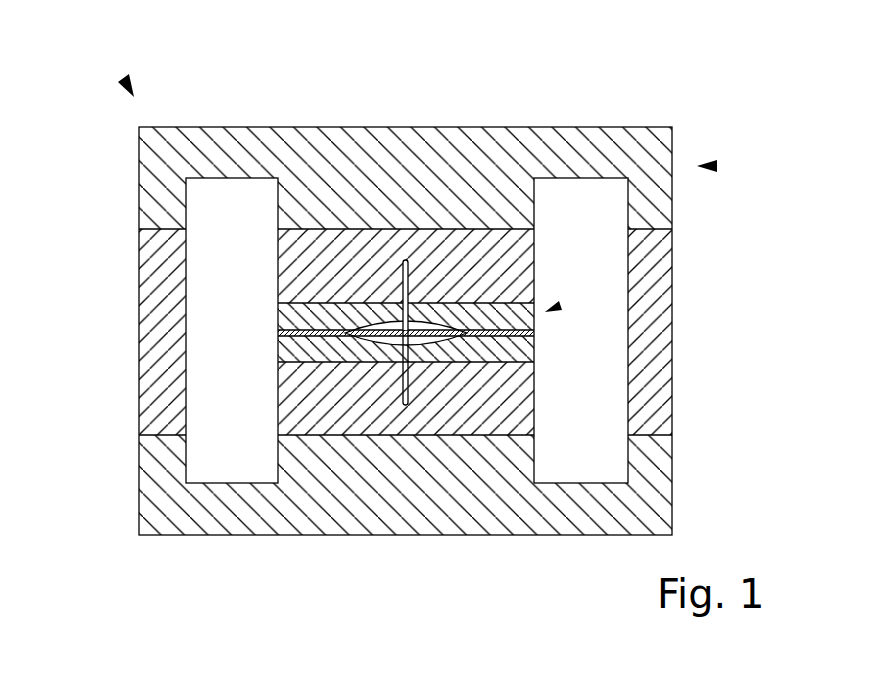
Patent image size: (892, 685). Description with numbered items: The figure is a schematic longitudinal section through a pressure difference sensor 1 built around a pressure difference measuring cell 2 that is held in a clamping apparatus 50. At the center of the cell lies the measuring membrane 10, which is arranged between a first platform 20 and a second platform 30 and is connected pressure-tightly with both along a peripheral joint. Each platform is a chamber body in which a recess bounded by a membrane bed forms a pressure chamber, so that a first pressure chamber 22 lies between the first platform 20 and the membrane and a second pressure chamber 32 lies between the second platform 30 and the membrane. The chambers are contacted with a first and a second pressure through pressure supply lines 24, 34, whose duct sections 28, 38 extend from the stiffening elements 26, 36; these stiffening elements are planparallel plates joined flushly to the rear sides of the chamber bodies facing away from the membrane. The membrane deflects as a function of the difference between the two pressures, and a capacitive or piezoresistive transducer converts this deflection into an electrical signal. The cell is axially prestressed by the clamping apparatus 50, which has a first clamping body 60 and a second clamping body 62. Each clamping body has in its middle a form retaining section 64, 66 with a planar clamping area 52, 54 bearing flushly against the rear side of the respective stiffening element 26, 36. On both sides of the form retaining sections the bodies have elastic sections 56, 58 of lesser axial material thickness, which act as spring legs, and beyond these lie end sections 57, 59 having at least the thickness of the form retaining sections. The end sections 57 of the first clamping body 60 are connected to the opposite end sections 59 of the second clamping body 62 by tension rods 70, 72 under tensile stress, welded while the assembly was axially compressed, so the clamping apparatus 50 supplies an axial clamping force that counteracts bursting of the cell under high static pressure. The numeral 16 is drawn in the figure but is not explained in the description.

The pressure difference sensor 1 is at (127, 79).
The pressure difference measuring cell 2 is at (556, 306).
The measuring membrane 10 is at (540, 331).
The pin 16 is at (393, 300).
The first platform 20 is at (518, 310).
The first pressure chamber 22 is at (412, 305).
The pressure supply line 24 is at (435, 323).
The stiffening element 26 is at (508, 243).
The duct section 28 is at (413, 282).
The second platform 30 is at (534, 361).
The second pressure chamber 32 is at (470, 349).
The pressure supply line 34 is at (414, 357).
The stiffening element 36 is at (380, 363).
The duct section 38 is at (414, 353).
The clamping apparatus 50 is at (710, 166).
The clamping area 52 is at (342, 231).
The clamping area 54 is at (357, 426).
The elastic section 56 is at (232, 163).
The end section 57 is at (163, 177).
The elastic section 58 is at (237, 505).
The end section 59 is at (162, 475).
The first clamping body 60 is at (498, 152).
The second clamping body 62 is at (307, 495).
The form retaining section 64 is at (405, 210).
The form retaining section 66 is at (408, 407).
The tension rod 70 is at (163, 325).
The tension rod 72 is at (658, 318).